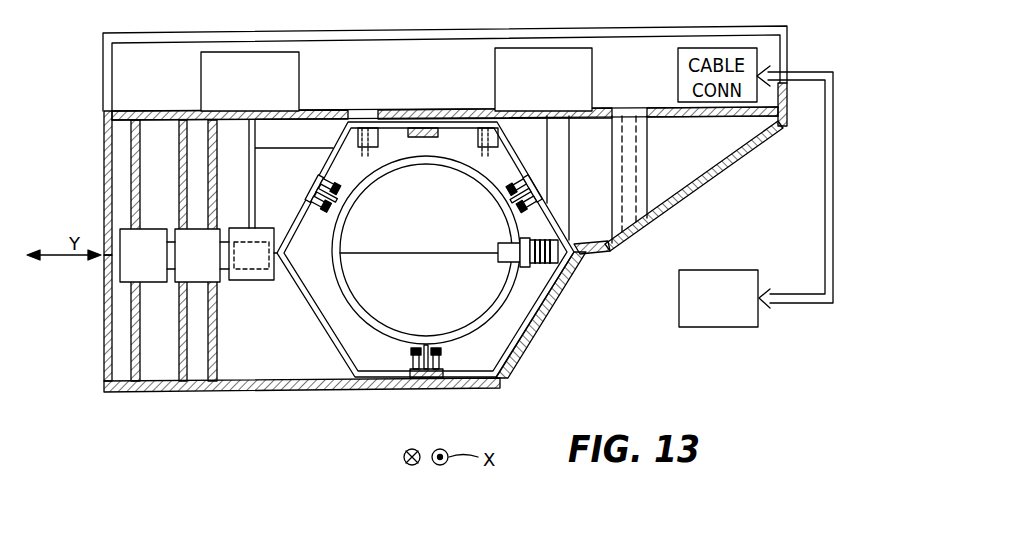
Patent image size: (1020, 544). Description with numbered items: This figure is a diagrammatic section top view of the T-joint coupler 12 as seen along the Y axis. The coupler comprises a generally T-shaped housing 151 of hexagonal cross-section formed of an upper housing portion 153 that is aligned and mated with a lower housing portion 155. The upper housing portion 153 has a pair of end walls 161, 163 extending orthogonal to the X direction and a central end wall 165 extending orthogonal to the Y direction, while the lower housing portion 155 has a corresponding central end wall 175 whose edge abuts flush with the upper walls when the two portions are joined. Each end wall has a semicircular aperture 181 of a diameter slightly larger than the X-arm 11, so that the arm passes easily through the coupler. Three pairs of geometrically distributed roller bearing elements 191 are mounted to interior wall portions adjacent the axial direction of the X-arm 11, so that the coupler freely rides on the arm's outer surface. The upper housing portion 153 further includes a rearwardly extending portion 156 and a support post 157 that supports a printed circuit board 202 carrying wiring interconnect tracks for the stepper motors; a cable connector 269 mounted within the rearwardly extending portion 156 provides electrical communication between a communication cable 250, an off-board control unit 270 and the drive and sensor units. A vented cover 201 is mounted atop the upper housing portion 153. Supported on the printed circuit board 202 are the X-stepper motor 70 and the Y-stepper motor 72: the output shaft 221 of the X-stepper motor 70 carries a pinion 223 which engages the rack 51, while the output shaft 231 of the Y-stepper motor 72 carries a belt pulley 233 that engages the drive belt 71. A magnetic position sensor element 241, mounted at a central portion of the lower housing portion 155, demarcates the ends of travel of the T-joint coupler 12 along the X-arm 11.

The vented cover 201 is at (788, 50).
The printed circuit board 202 is at (128, 111).
The Y-stepper motor 72 is at (300, 75).
The X-stepper motor 70 is at (495, 60).
The magnetic position sensor element 241 is at (428, 128).
The cable connector 269 is at (672, 66).
The support post 157 is at (645, 150).
The rearwardly extending portion 156 is at (708, 178).
The T-joint coupler 12 is at (620, 246).
The pinion 223 is at (558, 294).
The end wall 161 is at (575, 315).
The end wall 163 is at (575, 315).
The X-arm 11 is at (362, 188).
The semicircular aperture 181 is at (350, 304).
The rack 51 is at (502, 267).
The roller bearing elements 191 is at (328, 213).
The T-shaped housing 151 is at (280, 284).
The central end wall 175 is at (103, 368).
The upper housing portion 153 is at (103, 162).
The lower housing portion 155 is at (103, 346).
The central end wall 165 is at (138, 200).
The drive belt 71 is at (177, 228).
The belt pulley 233 is at (255, 283).
The output shaft 231 is at (262, 167).
The output shaft 221 is at (547, 170).
The communication cable 250 is at (825, 231).
The control unit 270 is at (733, 270).